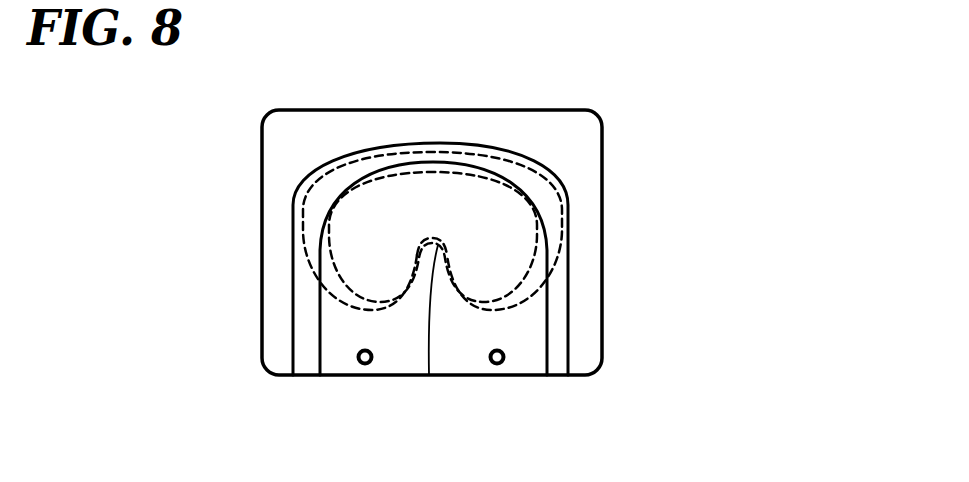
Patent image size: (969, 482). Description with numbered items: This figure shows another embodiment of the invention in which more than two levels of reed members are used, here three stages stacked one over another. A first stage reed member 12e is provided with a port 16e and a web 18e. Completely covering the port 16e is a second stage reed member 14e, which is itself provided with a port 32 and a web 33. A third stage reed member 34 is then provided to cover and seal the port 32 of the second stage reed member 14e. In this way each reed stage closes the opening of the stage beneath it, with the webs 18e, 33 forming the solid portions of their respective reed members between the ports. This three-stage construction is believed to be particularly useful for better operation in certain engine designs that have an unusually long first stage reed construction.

The first stage reed member 12e is at (587, 173).
The second stage reed member 14e is at (557, 366).
The port 16e is at (562, 250).
The web 18e is at (415, 249).
The port 32 is at (513, 288).
The web 33 is at (429, 375).
The third stage reed member 34 is at (462, 368).